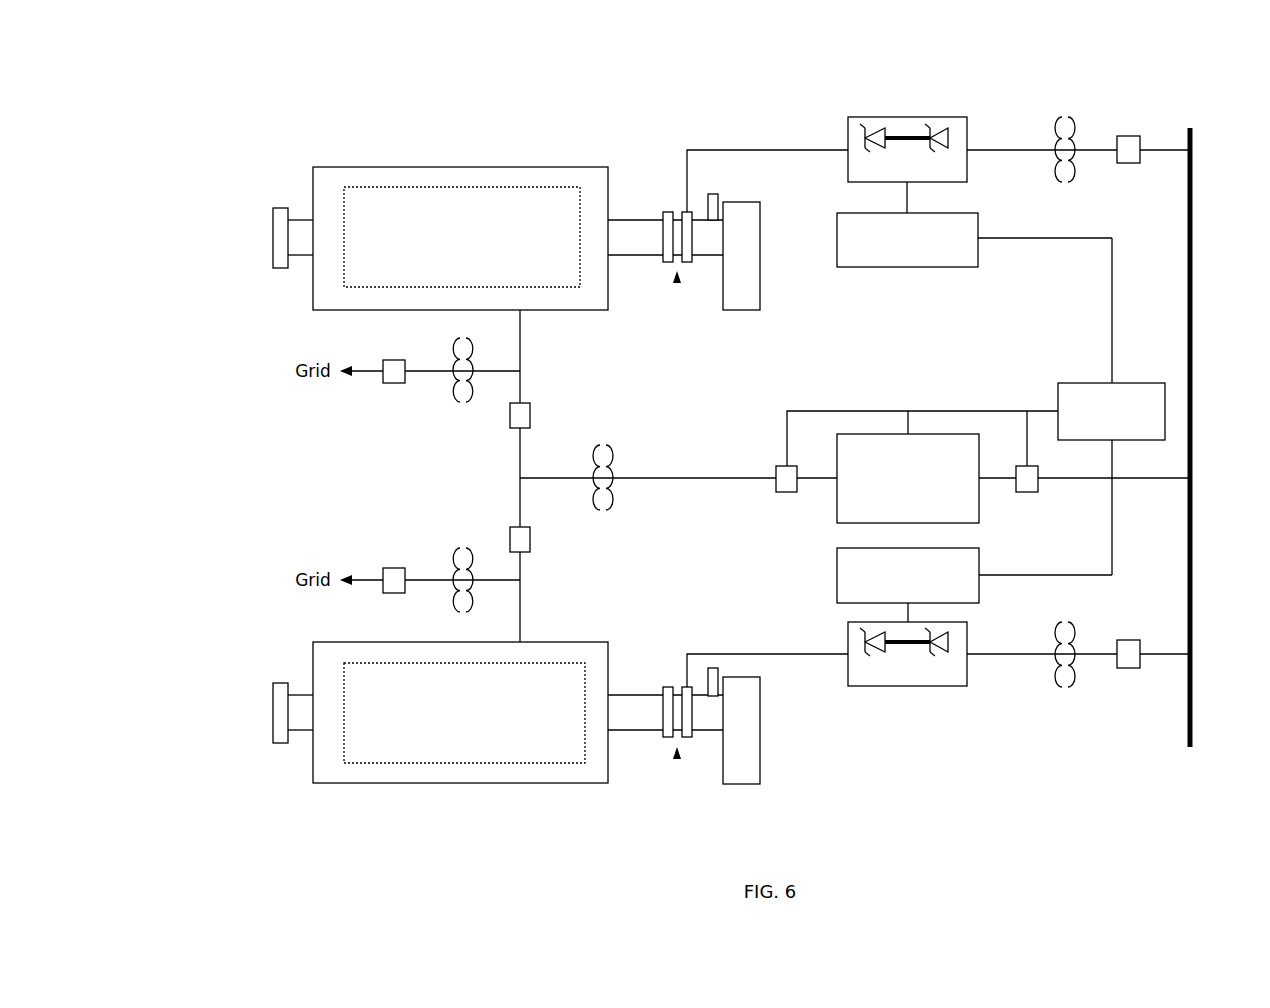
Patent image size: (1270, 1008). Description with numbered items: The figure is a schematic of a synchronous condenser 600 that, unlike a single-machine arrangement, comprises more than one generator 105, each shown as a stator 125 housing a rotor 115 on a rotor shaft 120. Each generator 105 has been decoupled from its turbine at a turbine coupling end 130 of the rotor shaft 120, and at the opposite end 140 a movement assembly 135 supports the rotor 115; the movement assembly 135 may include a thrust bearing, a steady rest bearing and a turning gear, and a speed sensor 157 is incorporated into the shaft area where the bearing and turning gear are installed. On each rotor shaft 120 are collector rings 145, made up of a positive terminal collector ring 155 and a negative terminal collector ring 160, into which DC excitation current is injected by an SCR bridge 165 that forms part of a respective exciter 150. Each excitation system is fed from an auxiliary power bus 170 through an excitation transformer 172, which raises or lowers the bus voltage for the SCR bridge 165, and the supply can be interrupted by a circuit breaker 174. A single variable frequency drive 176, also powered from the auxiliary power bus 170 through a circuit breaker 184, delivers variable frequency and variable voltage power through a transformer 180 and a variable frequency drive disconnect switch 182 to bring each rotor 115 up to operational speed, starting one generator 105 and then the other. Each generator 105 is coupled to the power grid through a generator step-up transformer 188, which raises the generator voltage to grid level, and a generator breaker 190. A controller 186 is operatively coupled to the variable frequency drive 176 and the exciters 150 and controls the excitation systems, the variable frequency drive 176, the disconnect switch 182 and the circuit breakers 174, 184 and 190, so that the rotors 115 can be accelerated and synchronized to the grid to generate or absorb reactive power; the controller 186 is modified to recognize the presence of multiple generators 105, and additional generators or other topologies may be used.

The synchronous generator 105 is at (510, 464).
The rotor 115 is at (540, 187).
The rotor shaft 120 is at (632, 220).
The stator 125 is at (408, 167).
The turbine coupling end 130 is at (282, 208).
The movement assembly 135 is at (752, 202).
The end 140 is at (722, 260).
The collector rings 145 is at (679, 285).
The exciter 150 is at (903, 267).
The positive terminal collector ring 155 is at (688, 212).
The speed sensor 157 is at (713, 194).
The negative terminal collector ring 160 is at (668, 212).
The SCR bridge 165 is at (895, 117).
The auxiliary power bus 170 is at (1193, 732).
The excitation transformer 172 is at (1063, 112).
The circuit breaker 174 is at (1130, 136).
The variable frequency drive 176 is at (940, 523).
The transformer 180 is at (600, 510).
The variable frequency drive disconnect switch 182 is at (780, 492).
The circuit breaker 184 is at (1027, 492).
The controller 186 is at (1137, 383).
The generator step-up transformer 188 is at (462, 410).
The generator breaker 190 is at (398, 383).
The synchronous condenser 600 is at (174, 395).